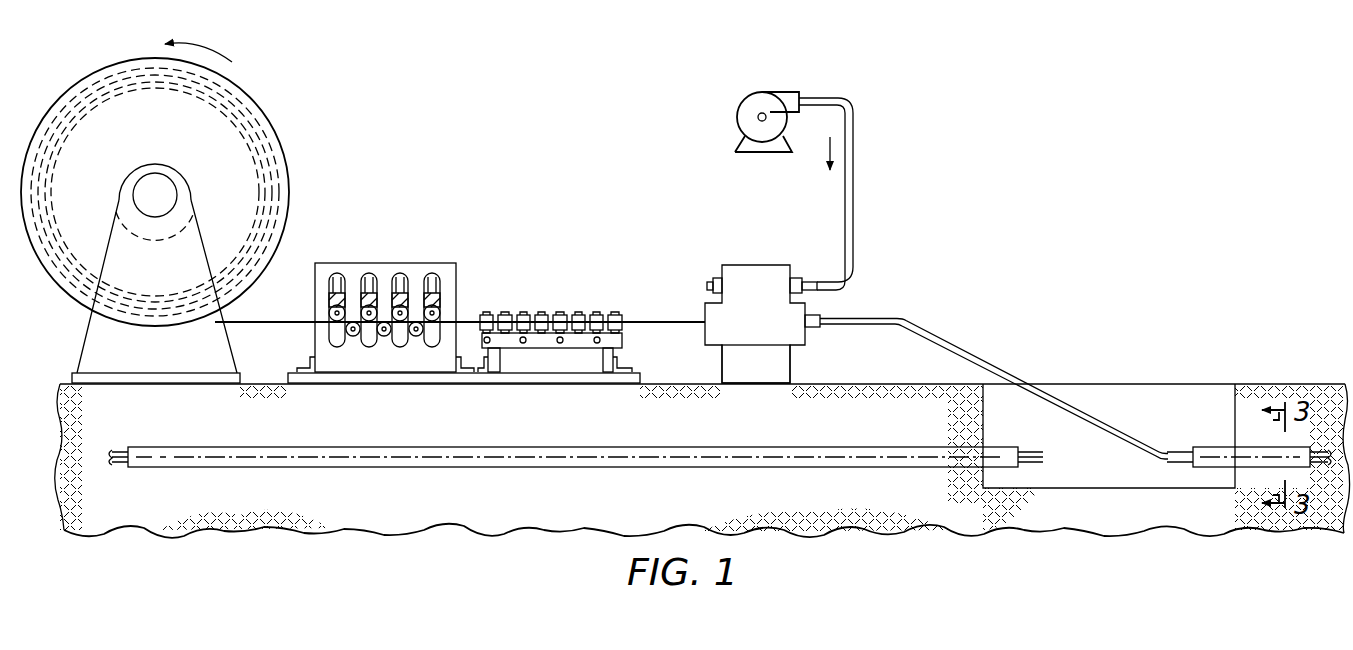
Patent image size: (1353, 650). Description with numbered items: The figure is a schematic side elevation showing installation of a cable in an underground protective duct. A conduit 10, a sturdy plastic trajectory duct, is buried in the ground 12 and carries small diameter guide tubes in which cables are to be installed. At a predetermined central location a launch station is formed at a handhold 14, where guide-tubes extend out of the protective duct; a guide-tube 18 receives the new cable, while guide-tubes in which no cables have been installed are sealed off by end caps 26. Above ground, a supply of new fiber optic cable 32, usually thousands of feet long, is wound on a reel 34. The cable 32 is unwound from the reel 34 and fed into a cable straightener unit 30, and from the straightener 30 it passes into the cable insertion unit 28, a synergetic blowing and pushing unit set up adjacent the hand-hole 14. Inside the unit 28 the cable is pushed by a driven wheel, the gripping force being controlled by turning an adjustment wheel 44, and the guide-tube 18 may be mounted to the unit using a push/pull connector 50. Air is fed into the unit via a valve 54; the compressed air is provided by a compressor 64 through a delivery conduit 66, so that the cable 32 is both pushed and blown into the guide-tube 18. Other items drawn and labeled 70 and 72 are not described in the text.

The conduit 10 is at (835, 447).
The ground 12 is at (385, 520).
The handhold 14 is at (1112, 488).
The guide-tube 18 is at (890, 320).
The end cap 26 is at (1028, 448).
The cable insertion unit 28 is at (751, 262).
The cable straightener unit 30 is at (470, 224).
The cable 32 is at (282, 325).
The reel 34 is at (88, 76).
The adjustment wheel 44 is at (708, 287).
The push/pull connector 50 is at (817, 330).
The valve 54 is at (797, 277).
The compressor 64 is at (760, 92).
The delivery conduit 66 is at (856, 183).
The cable feeder 70 is at (383, 260).
The cable straightener 72 is at (555, 306).